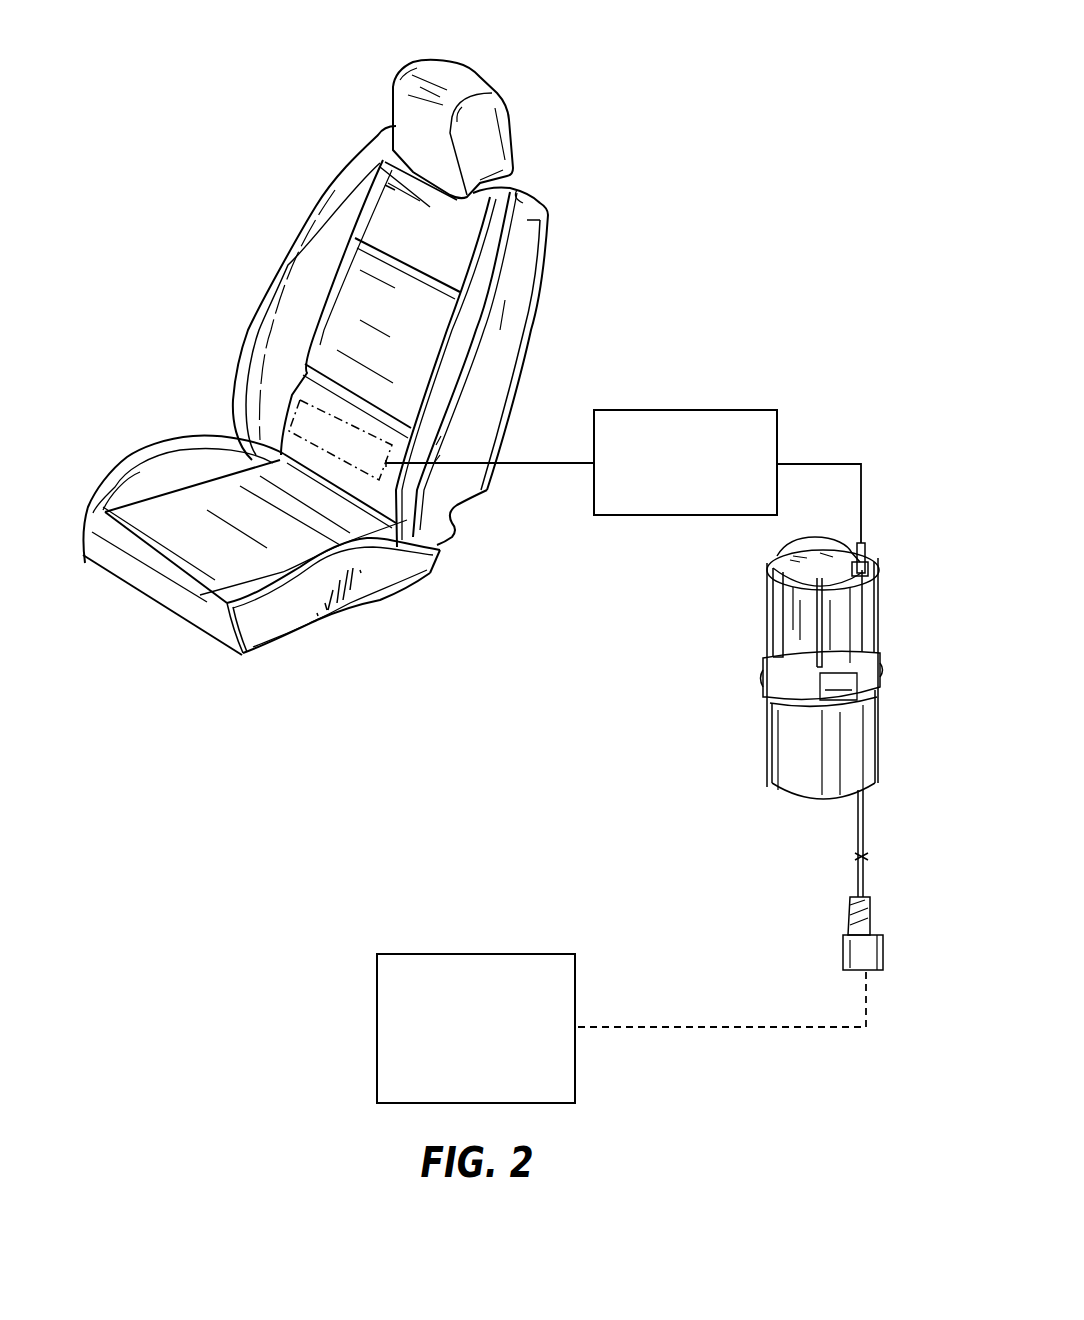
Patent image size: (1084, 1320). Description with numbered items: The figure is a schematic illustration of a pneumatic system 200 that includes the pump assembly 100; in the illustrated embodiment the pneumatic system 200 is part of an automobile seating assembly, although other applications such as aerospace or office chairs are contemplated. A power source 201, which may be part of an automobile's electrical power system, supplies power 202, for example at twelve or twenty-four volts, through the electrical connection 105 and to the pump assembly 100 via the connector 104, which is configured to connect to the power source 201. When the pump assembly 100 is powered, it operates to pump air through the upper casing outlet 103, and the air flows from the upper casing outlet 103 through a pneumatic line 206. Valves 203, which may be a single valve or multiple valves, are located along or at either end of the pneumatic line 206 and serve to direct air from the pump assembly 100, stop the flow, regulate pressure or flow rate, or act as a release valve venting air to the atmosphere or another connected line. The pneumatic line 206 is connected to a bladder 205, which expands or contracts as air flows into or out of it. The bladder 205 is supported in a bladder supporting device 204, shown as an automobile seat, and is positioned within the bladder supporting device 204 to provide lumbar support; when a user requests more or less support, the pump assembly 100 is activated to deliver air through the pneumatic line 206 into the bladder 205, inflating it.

The pump assembly 100 is at (740, 607).
The upper casing outlet 103 is at (866, 543).
The connector 104 is at (842, 947).
The electrical connection 105 is at (858, 828).
The pneumatic system 200 is at (242, 880).
The power source 201 is at (442, 953).
The power 202 is at (735, 1025).
The valves 203 is at (680, 410).
The bladder supporting device 204 is at (337, 222).
The bladder 205 is at (292, 421).
The pneumatic line 206 is at (548, 466).